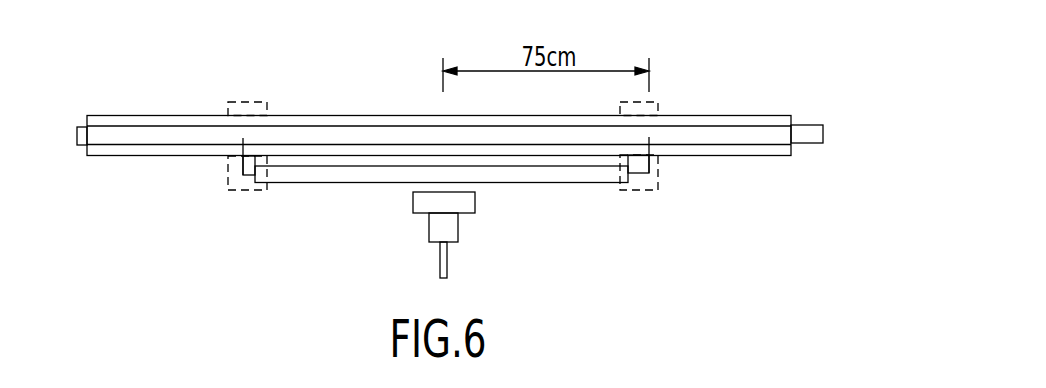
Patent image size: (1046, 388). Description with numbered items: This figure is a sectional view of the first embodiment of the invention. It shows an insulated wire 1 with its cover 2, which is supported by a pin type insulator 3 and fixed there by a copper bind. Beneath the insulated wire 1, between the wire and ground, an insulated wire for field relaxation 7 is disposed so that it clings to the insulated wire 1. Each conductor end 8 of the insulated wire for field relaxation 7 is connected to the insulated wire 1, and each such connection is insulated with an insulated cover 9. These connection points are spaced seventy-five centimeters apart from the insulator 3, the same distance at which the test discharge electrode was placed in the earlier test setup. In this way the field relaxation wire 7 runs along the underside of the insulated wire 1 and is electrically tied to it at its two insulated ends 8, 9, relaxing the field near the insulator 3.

The insulated wire 1 is at (331, 135).
The cover 2 is at (385, 115).
The pin type insulator 3 is at (413, 200).
The insulated wire for field relaxation 7 is at (592, 182).
The conductor end 8 is at (243, 165).
The insulated cover 9 is at (248, 190).